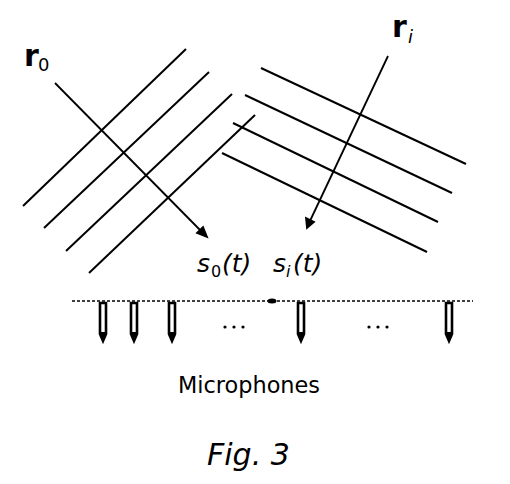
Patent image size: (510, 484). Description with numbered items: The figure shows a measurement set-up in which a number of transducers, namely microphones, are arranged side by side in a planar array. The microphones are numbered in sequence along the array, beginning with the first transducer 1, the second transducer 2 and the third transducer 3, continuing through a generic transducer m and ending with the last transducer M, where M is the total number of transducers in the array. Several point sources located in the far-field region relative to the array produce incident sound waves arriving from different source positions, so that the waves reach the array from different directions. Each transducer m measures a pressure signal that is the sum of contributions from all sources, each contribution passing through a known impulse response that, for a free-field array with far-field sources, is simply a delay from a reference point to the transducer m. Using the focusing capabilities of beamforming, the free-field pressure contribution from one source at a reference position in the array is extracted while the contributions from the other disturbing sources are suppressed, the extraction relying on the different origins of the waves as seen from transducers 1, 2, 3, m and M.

The transducer 1 is at (103, 336).
The transducer 2 is at (134, 336).
The transducer 3 is at (172, 336).
The transducer m is at (301, 336).
The transducer M is at (448, 335).